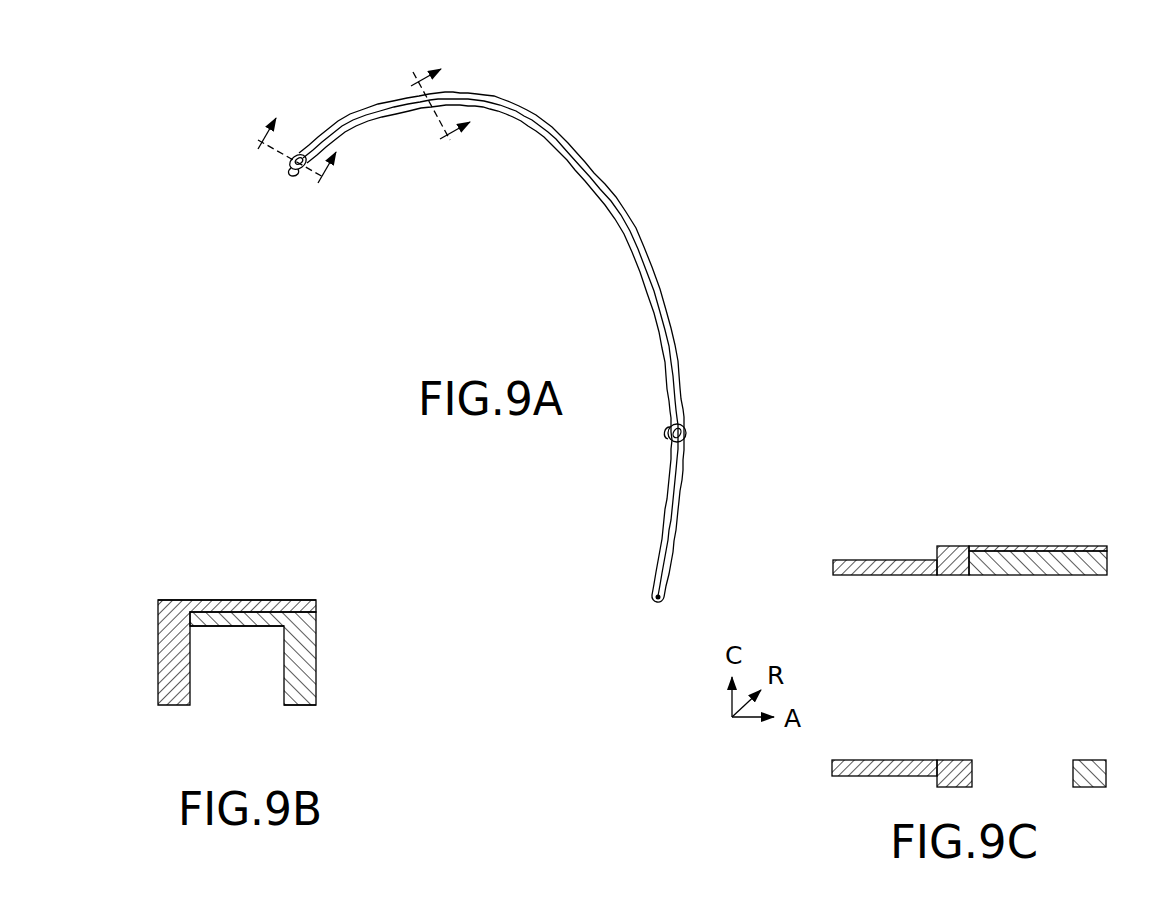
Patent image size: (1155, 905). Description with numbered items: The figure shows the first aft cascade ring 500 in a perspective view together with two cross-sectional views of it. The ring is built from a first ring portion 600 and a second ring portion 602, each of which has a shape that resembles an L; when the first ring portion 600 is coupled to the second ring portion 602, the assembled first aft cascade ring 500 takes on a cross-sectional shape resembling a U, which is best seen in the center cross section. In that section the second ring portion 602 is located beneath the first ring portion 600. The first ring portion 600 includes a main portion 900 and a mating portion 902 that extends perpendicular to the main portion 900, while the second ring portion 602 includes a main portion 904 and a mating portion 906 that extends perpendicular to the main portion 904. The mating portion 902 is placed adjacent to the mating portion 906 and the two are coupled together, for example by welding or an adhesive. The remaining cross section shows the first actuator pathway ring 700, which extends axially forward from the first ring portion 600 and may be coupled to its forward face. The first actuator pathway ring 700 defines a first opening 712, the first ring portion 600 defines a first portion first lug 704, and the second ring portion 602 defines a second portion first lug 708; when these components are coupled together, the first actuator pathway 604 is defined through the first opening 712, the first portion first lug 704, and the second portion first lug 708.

In FIG. 9A, the first aft cascade ring 500 is at (652, 203).
In FIG. 9A, the first ring portion 600 is at (348, 119).
In FIG. 9B, the first ring portion 600 is at (163, 661).
In FIG. 9C, the first ring portion 600 is at (951, 546).
In FIG. 9A, the second ring portion 602 is at (397, 113).
In FIG. 9B, the second ring portion 602 is at (310, 683).
In FIG. 9C, the second ring portion 602 is at (1025, 568).
In FIG. 9A, the first actuator pathway 604 is at (290, 167).
In FIG. 9C, the first actuator pathway 604 is at (977, 660).
In FIG. 9C, the first actuator pathway ring 700 is at (860, 568).
In FIG. 9A, the first portion first lug 704 is at (299, 172).
In FIG. 9A, the second portion first lug 708 is at (676, 433).
In FIG. 9A, the first opening 712 is at (667, 433).
In FIG. 9B, the main portion 900 is at (158, 620).
In FIG. 9B, the mating portion 902 is at (207, 606).
In FIG. 9B, the main portion 904 is at (307, 700).
In FIG. 9B, the mating portion 906 is at (233, 618).